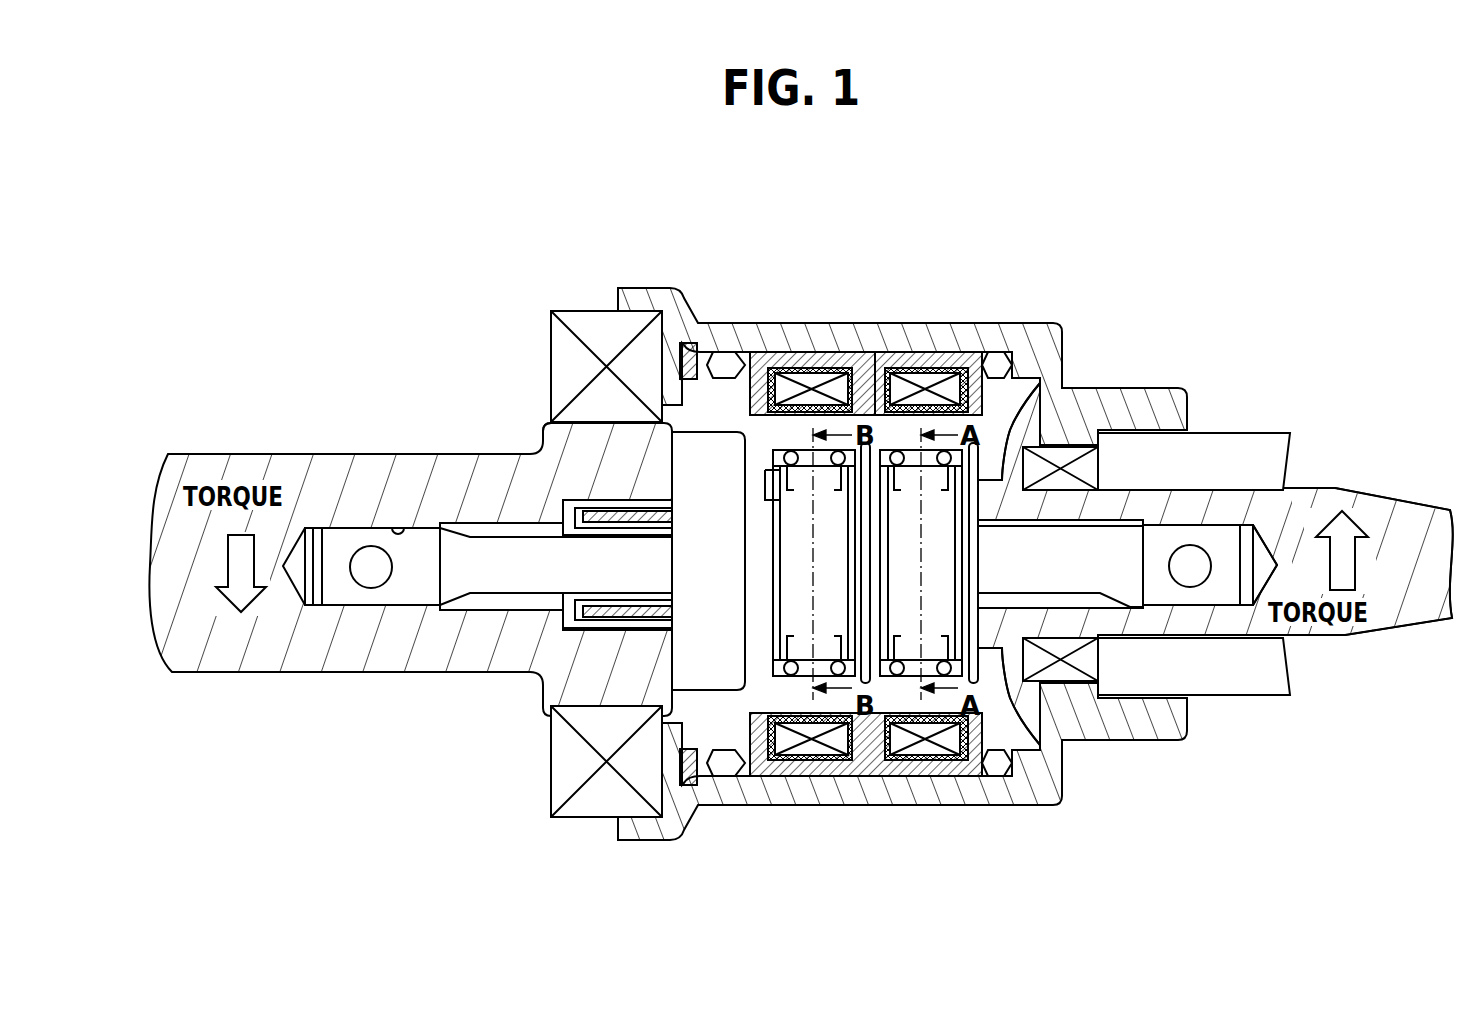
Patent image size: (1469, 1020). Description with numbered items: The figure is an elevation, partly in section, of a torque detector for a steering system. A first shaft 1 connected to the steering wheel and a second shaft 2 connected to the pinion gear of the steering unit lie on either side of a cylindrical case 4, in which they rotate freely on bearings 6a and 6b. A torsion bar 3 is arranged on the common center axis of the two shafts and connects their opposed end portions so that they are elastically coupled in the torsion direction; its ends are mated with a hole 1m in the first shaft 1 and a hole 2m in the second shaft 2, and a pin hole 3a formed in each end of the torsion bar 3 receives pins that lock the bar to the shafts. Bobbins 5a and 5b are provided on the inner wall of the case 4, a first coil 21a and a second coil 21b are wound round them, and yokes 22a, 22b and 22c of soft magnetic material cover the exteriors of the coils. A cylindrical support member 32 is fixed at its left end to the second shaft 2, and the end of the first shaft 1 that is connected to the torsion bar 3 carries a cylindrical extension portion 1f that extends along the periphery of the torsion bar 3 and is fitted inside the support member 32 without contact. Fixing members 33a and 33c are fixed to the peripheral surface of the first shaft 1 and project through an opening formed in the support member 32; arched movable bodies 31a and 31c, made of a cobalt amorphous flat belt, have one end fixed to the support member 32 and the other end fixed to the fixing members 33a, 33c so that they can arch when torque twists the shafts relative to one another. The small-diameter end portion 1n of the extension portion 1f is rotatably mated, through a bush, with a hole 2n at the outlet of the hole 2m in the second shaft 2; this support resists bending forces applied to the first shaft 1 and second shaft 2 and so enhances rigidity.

The first shaft 1 is at (1388, 522).
The cylindrical extension portion 1f is at (1004, 478).
The hole 1m is at (1135, 497).
The end portion 1n is at (612, 616).
The second shaft 2 is at (373, 470).
The hole 2m is at (406, 528).
The hole 2n is at (623, 500).
The torsion bar 3 is at (506, 585).
The pin hole 3a is at (362, 580).
The cylindrical case 4 is at (1043, 332).
The bobbin 5a is at (906, 748).
The bobbin 5b is at (814, 748).
The bearing 6a is at (1062, 460).
The bearing 6b is at (572, 358).
The first coil 21a is at (925, 395).
The second coil 21b is at (806, 390).
The yoke 22a is at (963, 368).
The yoke 22b is at (867, 368).
The yoke 22c is at (758, 352).
The arched movable body 31a is at (932, 588).
The arched movable body 31c is at (793, 603).
The support member 32 is at (690, 572).
The fixing member 33a is at (1060, 734).
The fixing member 33c is at (773, 484).